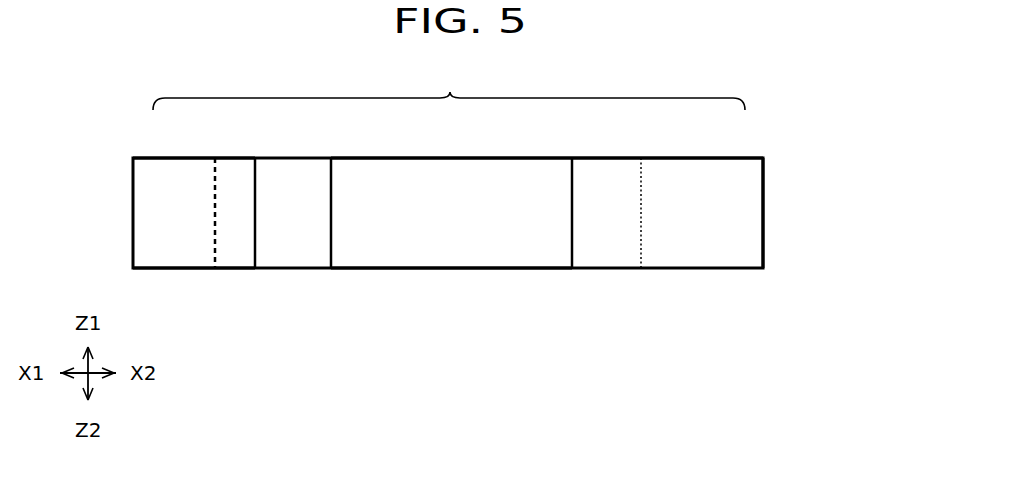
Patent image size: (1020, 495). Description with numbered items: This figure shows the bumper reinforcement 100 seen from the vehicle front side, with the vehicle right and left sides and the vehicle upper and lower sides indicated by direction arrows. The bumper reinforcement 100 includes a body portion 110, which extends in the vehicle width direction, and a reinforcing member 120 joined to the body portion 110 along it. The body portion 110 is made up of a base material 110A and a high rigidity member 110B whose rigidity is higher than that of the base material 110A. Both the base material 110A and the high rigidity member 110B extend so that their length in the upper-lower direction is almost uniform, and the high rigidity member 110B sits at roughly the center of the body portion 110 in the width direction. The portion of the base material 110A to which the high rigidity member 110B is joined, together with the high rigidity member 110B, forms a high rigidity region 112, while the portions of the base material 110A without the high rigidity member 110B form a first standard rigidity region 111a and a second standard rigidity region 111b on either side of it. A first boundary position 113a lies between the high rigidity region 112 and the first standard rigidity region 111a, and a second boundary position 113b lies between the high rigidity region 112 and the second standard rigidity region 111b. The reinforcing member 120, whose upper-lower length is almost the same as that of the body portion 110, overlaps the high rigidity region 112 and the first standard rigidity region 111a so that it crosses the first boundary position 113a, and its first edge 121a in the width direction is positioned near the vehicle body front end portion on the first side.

The bumper reinforcement 100 is at (800, 138).
The body portion 110 is at (449, 86).
The base material 110A is at (720, 222).
The high rigidity member 110B is at (463, 232).
The first standard rigidity region 111a is at (200, 170).
The second standard rigidity region 111b is at (702, 168).
The high rigidity region 112 is at (449, 168).
The first boundary position 113a is at (331, 268).
The second boundary position 113b is at (572, 268).
The reinforcing member 120 is at (238, 238).
The first edge 121a is at (214, 228).